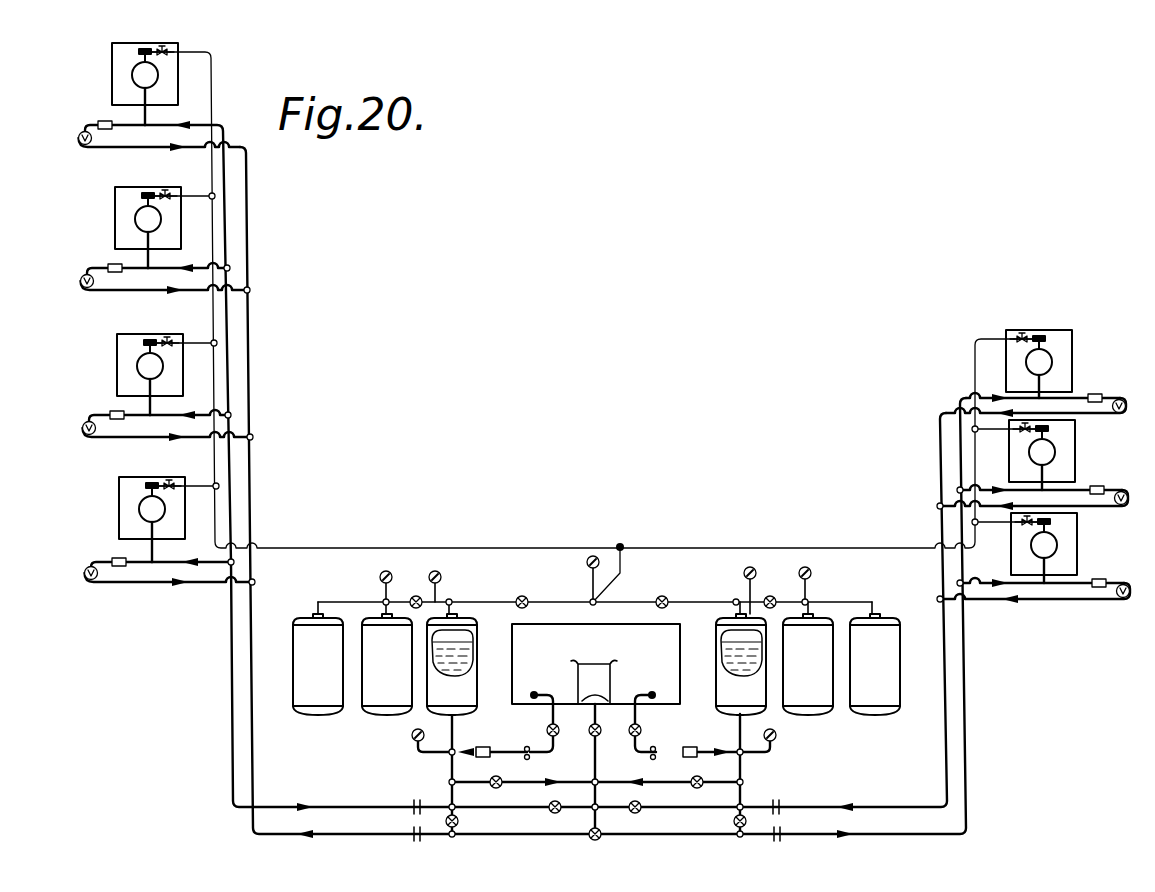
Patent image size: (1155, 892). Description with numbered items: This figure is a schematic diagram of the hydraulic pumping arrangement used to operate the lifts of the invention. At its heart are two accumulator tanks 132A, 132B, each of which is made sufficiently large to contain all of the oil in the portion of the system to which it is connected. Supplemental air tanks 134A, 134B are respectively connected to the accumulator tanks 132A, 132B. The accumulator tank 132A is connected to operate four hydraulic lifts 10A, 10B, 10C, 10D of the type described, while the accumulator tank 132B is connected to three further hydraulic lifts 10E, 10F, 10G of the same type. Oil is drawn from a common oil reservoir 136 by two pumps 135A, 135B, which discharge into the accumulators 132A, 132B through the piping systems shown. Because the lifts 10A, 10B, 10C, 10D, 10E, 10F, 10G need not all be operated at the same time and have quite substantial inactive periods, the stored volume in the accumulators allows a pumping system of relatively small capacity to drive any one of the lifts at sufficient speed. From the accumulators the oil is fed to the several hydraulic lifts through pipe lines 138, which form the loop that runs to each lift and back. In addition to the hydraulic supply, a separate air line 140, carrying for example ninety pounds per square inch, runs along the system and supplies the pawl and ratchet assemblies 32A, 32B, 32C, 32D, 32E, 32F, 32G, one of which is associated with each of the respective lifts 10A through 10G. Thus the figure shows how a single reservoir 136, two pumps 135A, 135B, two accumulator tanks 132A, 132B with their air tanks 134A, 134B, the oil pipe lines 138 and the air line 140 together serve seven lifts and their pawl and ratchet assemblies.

The hydraulic lift 10A is at (142, 76).
The hydraulic lift 10B is at (147, 220).
The hydraulic lift 10C is at (149, 367).
The hydraulic lift 10D is at (151, 510).
The hydraulic lift 10E is at (1042, 362).
The hydraulic lift 10F is at (1045, 452).
The hydraulic lift 10G is at (1047, 545).
The pawl and ratchet assembly 32A is at (165, 47).
The pawl and ratchet assembly 32B is at (151, 190).
The pawl and ratchet assembly 32C is at (153, 337).
The pawl and ratchet assembly 32D is at (155, 480).
The pawl and ratchet assembly 32E is at (1050, 339).
The pawl and ratchet assembly 32F is at (1050, 429).
The pawl and ratchet assembly 32G is at (1052, 522).
The accumulator tank 132A is at (465, 638).
The accumulator tank 132B is at (735, 640).
The supplemental air tank 134A is at (372, 640).
The supplemental air tank 134B is at (880, 640).
The pump 135A is at (525, 750).
The pump 135B is at (655, 750).
The oil reservoir 136 is at (585, 640).
The pipe lines 138 is at (947, 708).
The air line 140 is at (642, 547).